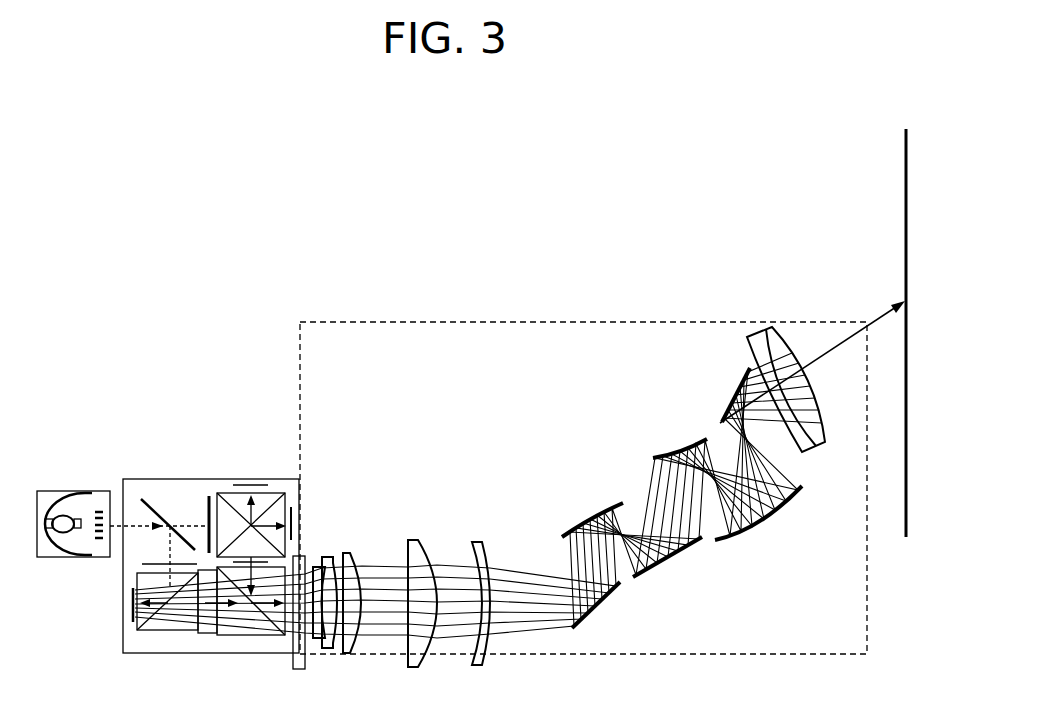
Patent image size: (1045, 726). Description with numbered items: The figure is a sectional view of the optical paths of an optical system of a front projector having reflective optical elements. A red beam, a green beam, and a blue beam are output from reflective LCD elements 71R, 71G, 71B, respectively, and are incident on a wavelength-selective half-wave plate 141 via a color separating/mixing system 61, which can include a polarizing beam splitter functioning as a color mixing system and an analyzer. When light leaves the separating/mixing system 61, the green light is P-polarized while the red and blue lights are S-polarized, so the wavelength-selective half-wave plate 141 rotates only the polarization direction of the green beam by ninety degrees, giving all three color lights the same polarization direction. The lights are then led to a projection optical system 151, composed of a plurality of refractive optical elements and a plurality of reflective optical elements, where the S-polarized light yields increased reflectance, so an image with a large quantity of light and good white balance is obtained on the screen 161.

The color separating/mixing system 61 is at (140, 479).
The reflective LCD element 71R is at (255, 468).
The reflective LCD element 71G is at (169, 592).
The reflective LCD element 71B is at (322, 524).
The wavelength-selective half-wave plate 141 is at (289, 646).
The projection optical system 151 is at (574, 320).
The screen 161 is at (904, 222).